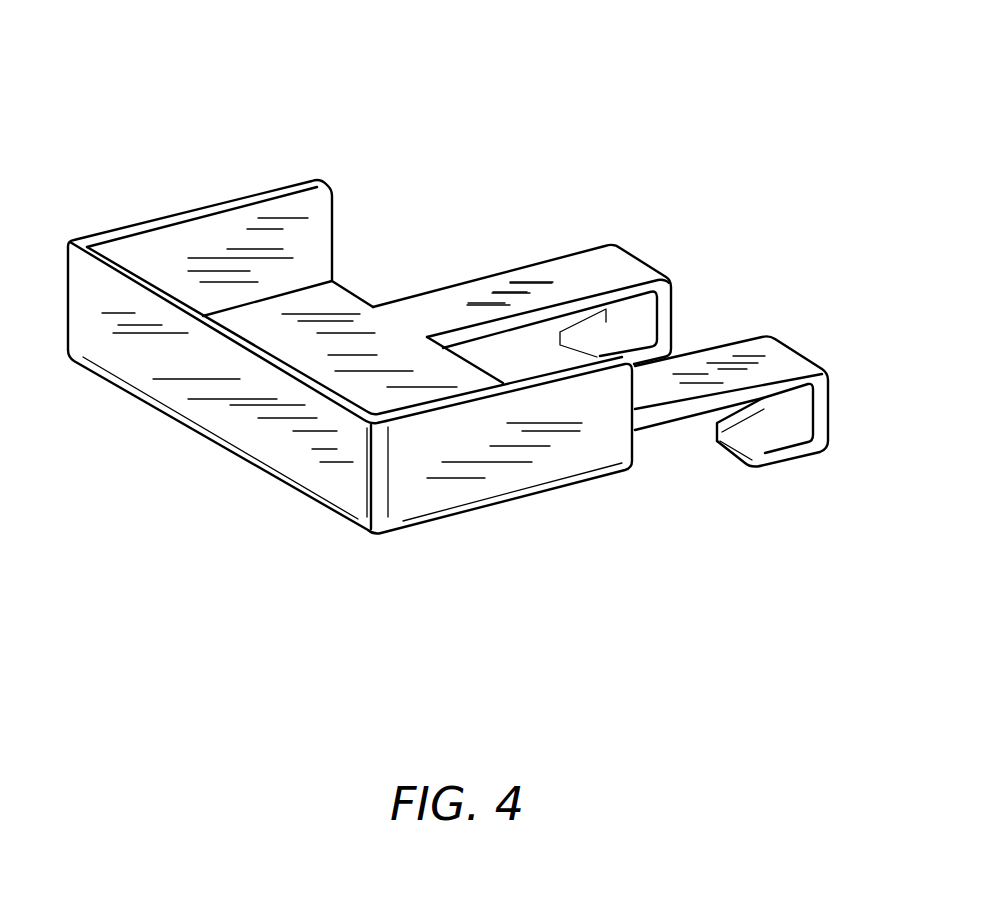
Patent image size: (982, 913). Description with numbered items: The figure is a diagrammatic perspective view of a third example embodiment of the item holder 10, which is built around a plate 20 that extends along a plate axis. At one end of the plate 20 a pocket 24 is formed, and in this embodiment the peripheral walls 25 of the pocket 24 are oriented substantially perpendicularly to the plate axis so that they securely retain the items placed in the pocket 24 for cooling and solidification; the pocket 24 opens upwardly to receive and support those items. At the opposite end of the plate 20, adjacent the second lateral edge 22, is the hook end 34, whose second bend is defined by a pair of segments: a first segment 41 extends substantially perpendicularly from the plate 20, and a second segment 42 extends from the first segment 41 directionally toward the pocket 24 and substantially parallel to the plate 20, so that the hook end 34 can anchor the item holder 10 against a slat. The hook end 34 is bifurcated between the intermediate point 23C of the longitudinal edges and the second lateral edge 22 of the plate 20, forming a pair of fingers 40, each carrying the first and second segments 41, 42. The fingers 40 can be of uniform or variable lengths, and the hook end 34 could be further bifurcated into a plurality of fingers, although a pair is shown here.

The item holder 10 is at (431, 86).
The plate 20 is at (497, 507).
The second lateral edge 22 is at (717, 445).
The intermediate point 23C is at (373, 307).
The pocket 24 is at (200, 240).
The peripheral wall 25 is at (400, 503).
The hook end 34 is at (709, 240).
The fingers 40 is at (588, 265).
The first segment 41 is at (828, 415).
The second segment 42 is at (795, 462).